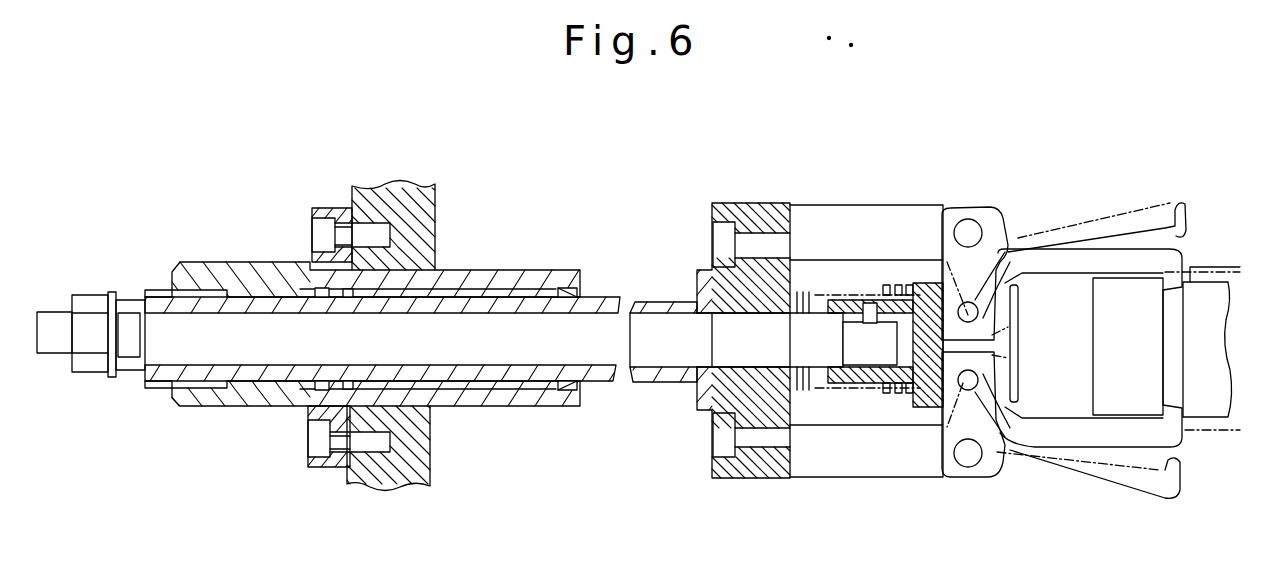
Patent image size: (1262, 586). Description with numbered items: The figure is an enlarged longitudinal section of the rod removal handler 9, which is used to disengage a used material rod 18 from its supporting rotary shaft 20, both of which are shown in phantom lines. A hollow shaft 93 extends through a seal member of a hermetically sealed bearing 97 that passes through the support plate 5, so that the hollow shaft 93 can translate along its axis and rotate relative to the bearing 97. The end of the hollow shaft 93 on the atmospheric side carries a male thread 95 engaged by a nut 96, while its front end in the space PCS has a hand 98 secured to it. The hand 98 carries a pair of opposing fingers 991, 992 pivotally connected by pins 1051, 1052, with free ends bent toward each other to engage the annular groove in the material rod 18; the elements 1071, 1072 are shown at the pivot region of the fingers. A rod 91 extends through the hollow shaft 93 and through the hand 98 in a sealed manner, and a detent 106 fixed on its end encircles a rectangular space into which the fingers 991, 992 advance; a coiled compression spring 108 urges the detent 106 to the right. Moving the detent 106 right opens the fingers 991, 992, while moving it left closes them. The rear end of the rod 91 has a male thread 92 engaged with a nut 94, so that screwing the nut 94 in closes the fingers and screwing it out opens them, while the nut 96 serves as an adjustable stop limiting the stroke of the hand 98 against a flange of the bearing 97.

The rod removal handler 9 is at (328, 324).
The rod 91 is at (162, 365).
The male thread 92 is at (52, 353).
The hollow shaft 93 is at (616, 297).
The nut 94 is at (92, 297).
The male thread 95 is at (157, 291).
The nut 96 is at (192, 262).
The hermetically sealed bearing 97 is at (323, 208).
The support plate 5 is at (437, 190).
The hand 98 is at (895, 205).
The detent 106 is at (930, 283).
The coiled compression spring 108 is at (805, 292).
The pin 1051 is at (968, 233).
The pin 1052 is at (967, 462).
The arm 1071 is at (1003, 243).
The arm 1072 is at (960, 385).
The finger 991 is at (1098, 245).
The finger 992 is at (1100, 450).
The material rod 18 is at (1128, 290).
The rotary shaft 20 is at (1213, 265).